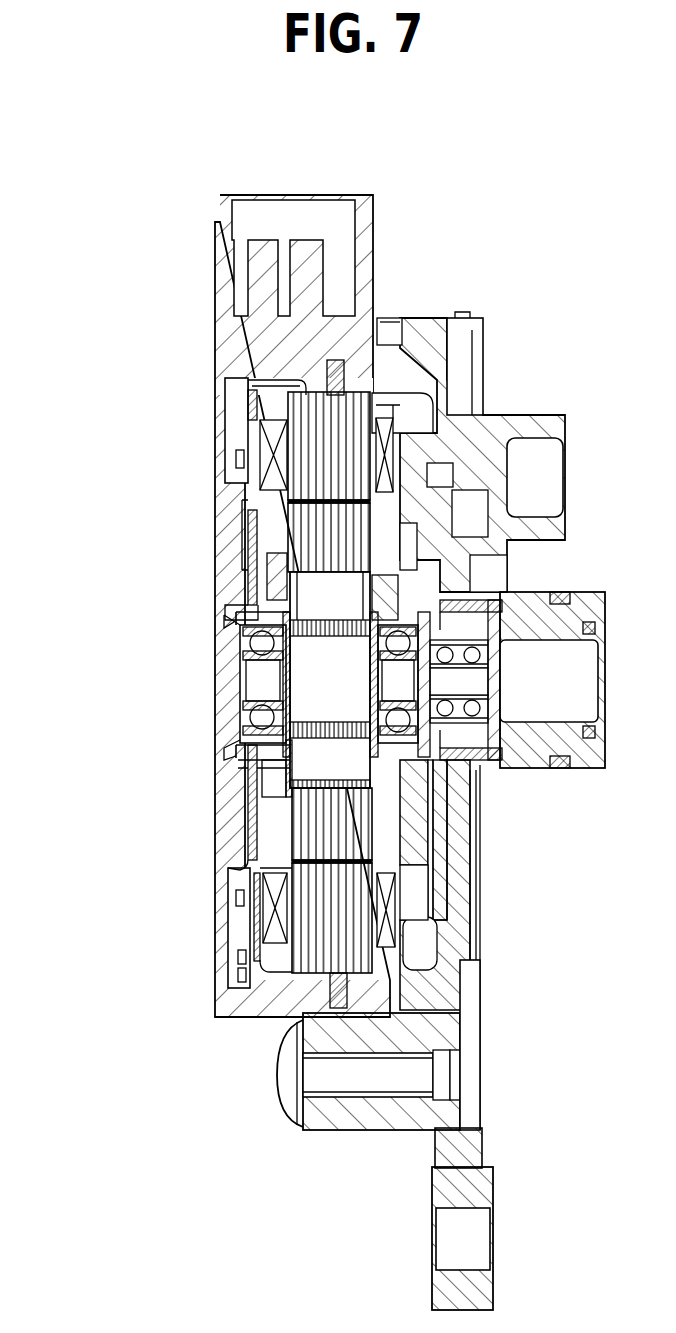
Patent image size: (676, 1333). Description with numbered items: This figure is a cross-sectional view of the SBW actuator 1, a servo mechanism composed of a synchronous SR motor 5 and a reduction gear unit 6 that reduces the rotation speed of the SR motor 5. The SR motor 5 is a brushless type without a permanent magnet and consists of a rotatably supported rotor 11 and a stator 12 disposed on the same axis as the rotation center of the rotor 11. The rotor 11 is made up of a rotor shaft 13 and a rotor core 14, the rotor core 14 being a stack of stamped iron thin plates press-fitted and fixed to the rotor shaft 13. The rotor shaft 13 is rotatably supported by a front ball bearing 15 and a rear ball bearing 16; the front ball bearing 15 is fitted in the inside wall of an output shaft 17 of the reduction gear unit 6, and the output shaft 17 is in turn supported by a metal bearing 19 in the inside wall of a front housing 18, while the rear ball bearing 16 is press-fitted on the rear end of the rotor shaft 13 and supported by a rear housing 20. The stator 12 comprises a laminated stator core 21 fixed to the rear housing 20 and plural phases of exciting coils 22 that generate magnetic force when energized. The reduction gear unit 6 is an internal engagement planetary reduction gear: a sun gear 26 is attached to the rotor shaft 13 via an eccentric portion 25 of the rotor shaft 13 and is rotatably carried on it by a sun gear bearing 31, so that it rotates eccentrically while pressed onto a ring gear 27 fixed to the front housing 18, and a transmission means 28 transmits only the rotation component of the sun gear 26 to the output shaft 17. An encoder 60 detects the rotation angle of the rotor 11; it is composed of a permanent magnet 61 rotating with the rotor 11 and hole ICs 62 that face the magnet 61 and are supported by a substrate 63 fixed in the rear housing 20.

The SBW actuator 1 is at (136, 311).
The SR motor 5 is at (45, 410).
The stator 12 is at (100, 395).
The stator core 21 is at (300, 440).
The exciting coils 22 is at (240, 462).
The rotor 11 is at (100, 500).
The rotor core 14 is at (296, 545).
The rotor shaft 13 is at (300, 615).
The rear ball bearing 16 is at (240, 652).
The substrate 63 is at (225, 758).
The encoder 60 is at (100, 782).
The hole ICs 62 is at (235, 815).
The permanent magnet 61 is at (258, 828).
The rear housing 20 is at (226, 1015).
The sun gear bearing 31 is at (358, 700).
The front ball bearing 15 is at (508, 590).
The metal bearing 19 is at (530, 605).
The output shaft 17 is at (515, 765).
The eccentric portion 25 is at (478, 775).
The transmission means 28 is at (473, 857).
The sun gear 26 is at (478, 903).
The ring gear 27 is at (473, 940).
The reduction gear unit 6 is at (548, 783).
The front housing 18 is at (445, 1020).